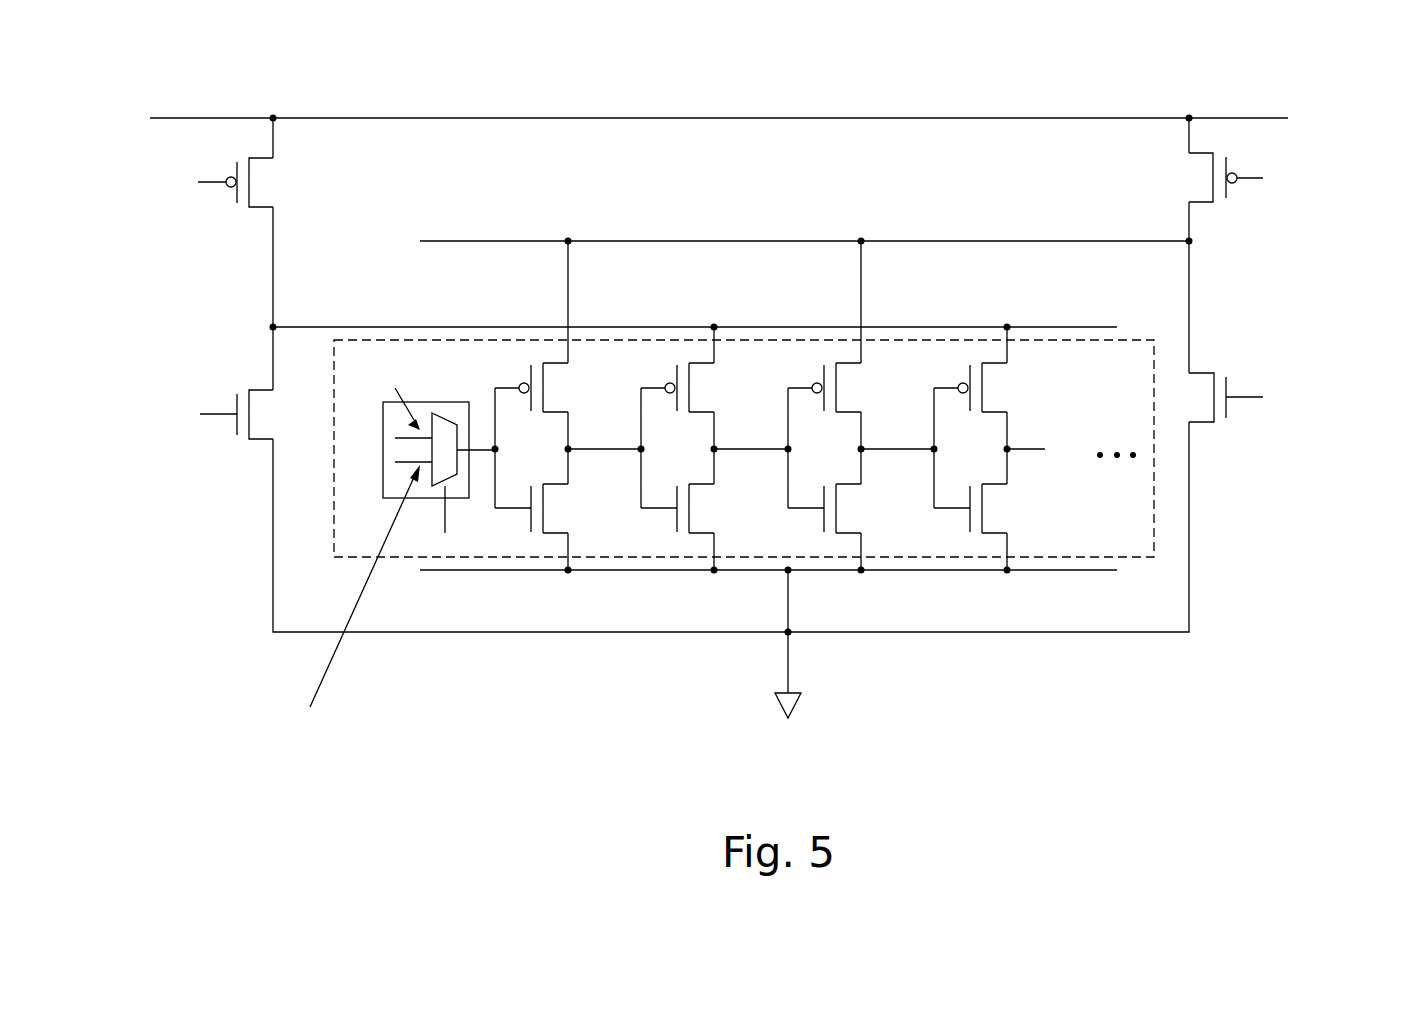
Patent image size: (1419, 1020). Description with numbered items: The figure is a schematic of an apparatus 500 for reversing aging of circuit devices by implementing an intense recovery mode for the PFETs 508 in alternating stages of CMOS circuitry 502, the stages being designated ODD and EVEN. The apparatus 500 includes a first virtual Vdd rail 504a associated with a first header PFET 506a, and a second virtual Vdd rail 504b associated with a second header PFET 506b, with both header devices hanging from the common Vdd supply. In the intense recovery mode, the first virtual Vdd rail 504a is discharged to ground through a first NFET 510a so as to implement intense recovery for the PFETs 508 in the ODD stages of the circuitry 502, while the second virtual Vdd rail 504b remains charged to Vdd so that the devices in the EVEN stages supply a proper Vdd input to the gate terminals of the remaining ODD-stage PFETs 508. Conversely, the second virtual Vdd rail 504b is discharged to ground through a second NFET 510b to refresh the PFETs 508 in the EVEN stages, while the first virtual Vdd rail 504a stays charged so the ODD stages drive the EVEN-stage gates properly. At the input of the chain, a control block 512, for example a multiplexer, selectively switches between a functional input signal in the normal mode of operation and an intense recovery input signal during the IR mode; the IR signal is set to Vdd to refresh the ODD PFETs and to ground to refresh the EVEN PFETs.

The apparatus 500 is at (165, 70).
The CMOS circuitry 502 is at (1155, 542).
The first virtual Vdd rail 504a is at (938, 241).
The second virtual Vdd rail 504b is at (310, 327).
The first header PFET 506a is at (1202, 205).
The second header PFET 506b is at (263, 208).
The PFETs 508 is at (557, 418).
The first NFET 510a is at (1203, 425).
The second NFET 510b is at (267, 440).
The control block 512 is at (383, 425).